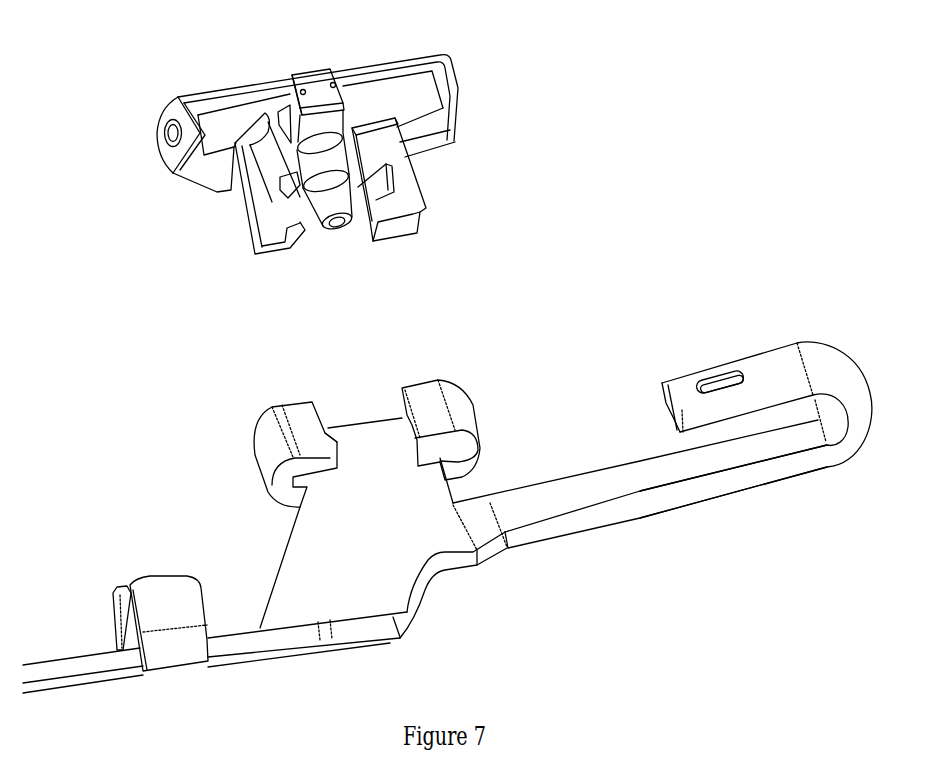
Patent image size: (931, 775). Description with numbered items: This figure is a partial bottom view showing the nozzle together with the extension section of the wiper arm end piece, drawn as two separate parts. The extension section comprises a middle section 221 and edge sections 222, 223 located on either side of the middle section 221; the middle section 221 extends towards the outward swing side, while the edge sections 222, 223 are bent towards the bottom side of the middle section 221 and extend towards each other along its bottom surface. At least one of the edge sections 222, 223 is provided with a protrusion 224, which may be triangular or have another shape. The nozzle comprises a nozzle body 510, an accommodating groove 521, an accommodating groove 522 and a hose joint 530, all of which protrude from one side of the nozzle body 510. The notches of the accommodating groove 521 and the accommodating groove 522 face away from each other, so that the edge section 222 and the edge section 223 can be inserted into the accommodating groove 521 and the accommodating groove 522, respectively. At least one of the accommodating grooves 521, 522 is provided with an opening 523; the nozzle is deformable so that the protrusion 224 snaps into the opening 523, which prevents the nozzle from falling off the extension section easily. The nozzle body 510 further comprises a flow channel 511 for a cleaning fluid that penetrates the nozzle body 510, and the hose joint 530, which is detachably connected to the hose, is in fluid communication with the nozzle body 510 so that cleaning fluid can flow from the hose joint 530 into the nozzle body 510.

The nozzle body 510 is at (457, 90).
The flow channel 511 is at (166, 134).
The accommodating groove 521 is at (404, 221).
The accommodating groove 522 is at (273, 238).
The opening 523 is at (383, 178).
The hose joint 530 is at (343, 198).
The middle section 221 is at (373, 437).
The edge section 222 is at (458, 425).
The edge section 223 is at (280, 430).
The protrusion 224 is at (332, 430).